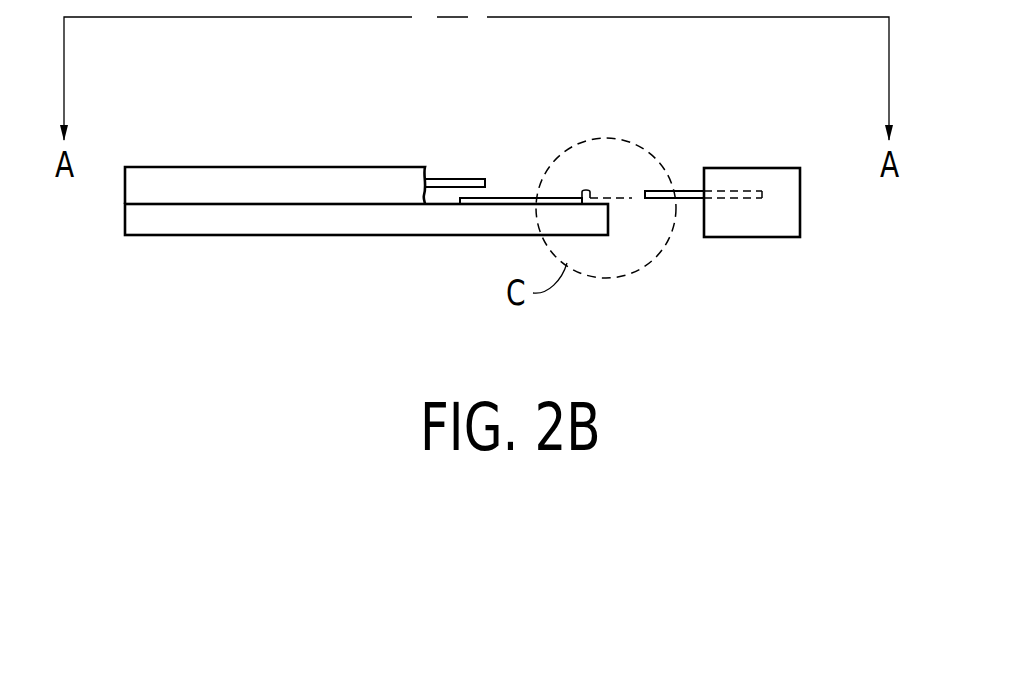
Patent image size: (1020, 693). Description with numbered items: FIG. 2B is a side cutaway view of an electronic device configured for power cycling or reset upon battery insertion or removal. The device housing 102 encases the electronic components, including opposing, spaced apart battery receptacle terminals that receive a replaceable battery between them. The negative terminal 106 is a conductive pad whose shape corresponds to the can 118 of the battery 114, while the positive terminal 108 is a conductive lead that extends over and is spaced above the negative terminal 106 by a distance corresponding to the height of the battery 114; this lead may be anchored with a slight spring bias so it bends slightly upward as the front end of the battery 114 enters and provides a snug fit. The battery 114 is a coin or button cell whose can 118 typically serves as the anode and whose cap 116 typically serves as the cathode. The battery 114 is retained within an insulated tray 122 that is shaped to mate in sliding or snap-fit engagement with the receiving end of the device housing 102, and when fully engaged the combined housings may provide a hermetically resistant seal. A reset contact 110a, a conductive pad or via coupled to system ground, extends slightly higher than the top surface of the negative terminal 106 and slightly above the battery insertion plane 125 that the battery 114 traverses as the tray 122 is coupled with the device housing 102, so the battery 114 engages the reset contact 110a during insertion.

The device housing 102 is at (246, 177).
The negative terminal 106 is at (510, 198).
The positive terminal 108 is at (457, 179).
The reset contact 110a is at (586, 190).
The battery 114 is at (752, 191).
The cap 116 is at (680, 191).
The can 118 is at (677, 200).
The tray 122 is at (758, 238).
The battery insertion plane 125 is at (634, 198).